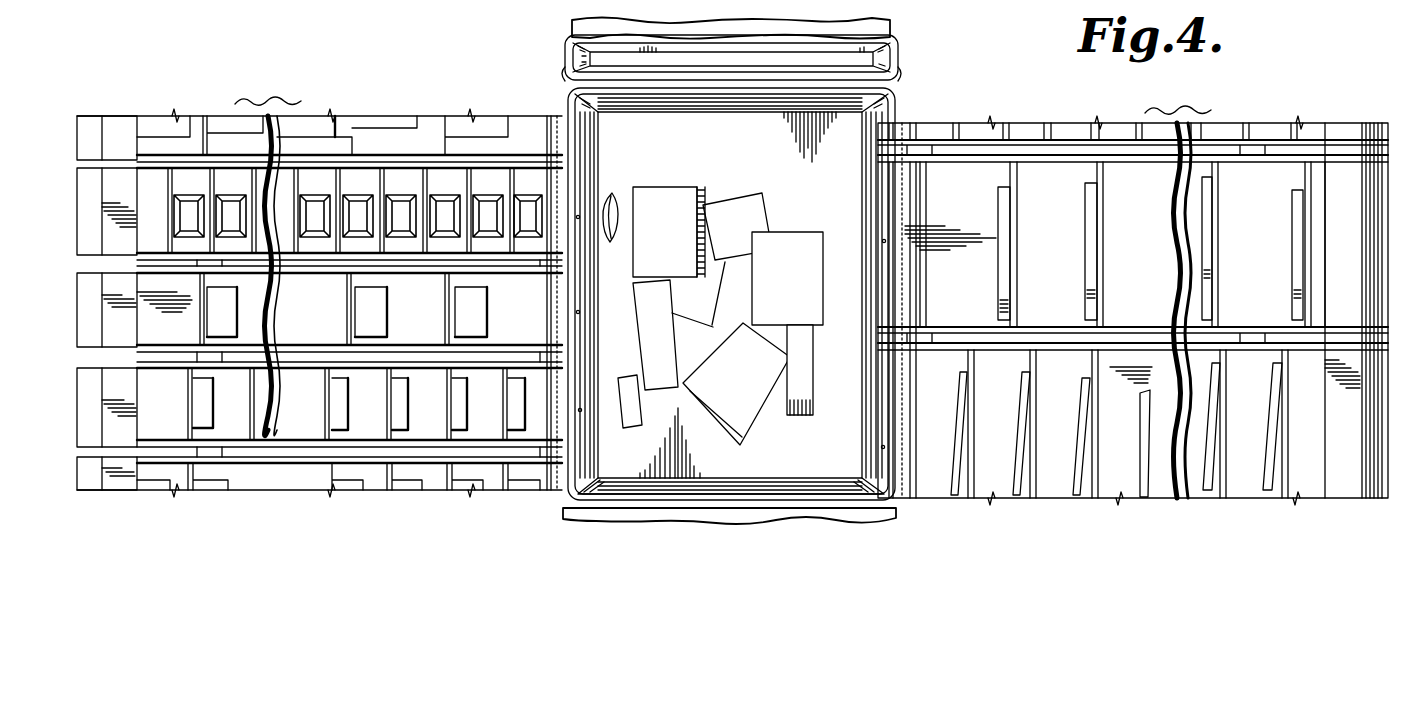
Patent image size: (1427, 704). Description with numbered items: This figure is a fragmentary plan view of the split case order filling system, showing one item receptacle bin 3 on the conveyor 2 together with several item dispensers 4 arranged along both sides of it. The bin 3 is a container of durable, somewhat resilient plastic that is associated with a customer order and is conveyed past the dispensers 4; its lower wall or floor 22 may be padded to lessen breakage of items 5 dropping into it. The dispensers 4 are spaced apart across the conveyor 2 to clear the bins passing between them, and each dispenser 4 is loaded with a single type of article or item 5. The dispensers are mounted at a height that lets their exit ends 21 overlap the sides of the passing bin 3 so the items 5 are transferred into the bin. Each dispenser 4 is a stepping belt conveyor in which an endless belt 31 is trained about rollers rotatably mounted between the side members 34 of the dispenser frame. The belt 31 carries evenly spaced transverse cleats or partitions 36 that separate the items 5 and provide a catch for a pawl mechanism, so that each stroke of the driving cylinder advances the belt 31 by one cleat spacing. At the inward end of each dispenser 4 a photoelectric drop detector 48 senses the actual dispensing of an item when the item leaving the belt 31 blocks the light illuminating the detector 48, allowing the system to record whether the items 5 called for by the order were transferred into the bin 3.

The conveyor 2 is at (773, 29).
The item receptacle bin 3 is at (563, 72).
The item dispenser 4 is at (122, 111).
The item 5 is at (398, 124).
The exit end 21 is at (842, 484).
The floor 22 is at (668, 138).
The endless belt 31 is at (396, 322).
The side member 34 is at (519, 352).
The cleat 36 is at (202, 332).
The drop detector 48 is at (883, 242).